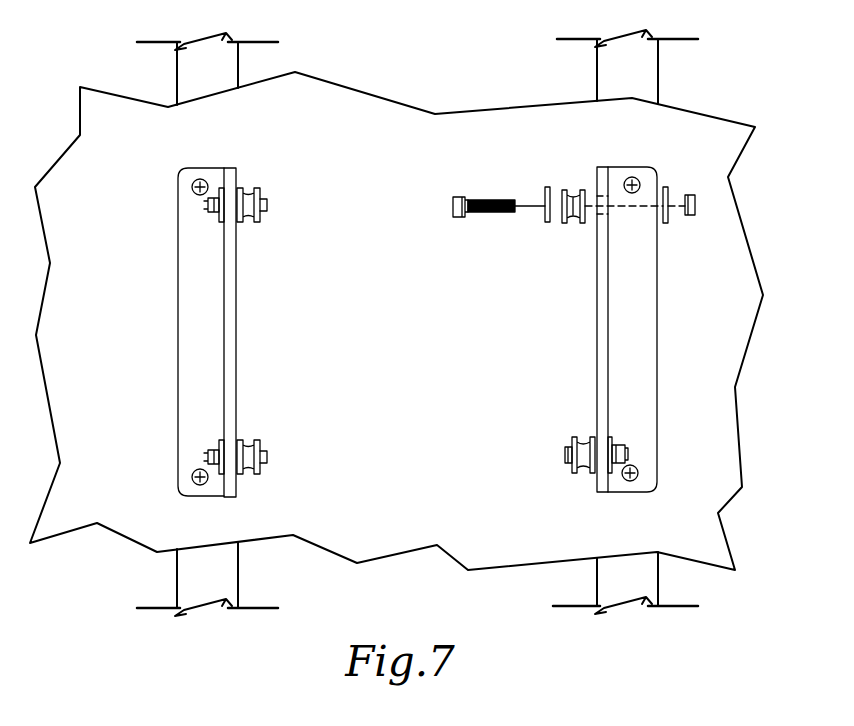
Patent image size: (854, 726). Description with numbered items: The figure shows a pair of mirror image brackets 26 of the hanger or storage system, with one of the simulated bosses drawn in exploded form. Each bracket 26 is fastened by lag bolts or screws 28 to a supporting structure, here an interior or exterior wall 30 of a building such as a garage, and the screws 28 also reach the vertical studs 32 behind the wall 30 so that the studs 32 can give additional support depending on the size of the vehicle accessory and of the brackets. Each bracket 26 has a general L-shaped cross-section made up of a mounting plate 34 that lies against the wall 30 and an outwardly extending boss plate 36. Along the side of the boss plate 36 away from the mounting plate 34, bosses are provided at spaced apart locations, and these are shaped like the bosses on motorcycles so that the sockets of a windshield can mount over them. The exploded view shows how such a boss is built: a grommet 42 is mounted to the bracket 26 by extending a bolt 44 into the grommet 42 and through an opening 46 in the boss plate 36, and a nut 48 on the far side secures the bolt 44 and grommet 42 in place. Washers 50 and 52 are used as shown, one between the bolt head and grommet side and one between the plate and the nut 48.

The bracket 26 is at (420, 332).
The screw 28 is at (192, 187).
The wall 30 is at (399, 334).
The vertical stud 32 is at (177, 76).
The mounting plate 34 is at (185, 331).
The boss plate 36 is at (236, 316).
The grommet 42 is at (247, 188).
The bolt 44 is at (268, 205).
The opening 46 is at (600, 203).
The nut 48 is at (210, 212).
The washer 50 is at (547, 190).
The washer 52 is at (667, 189).